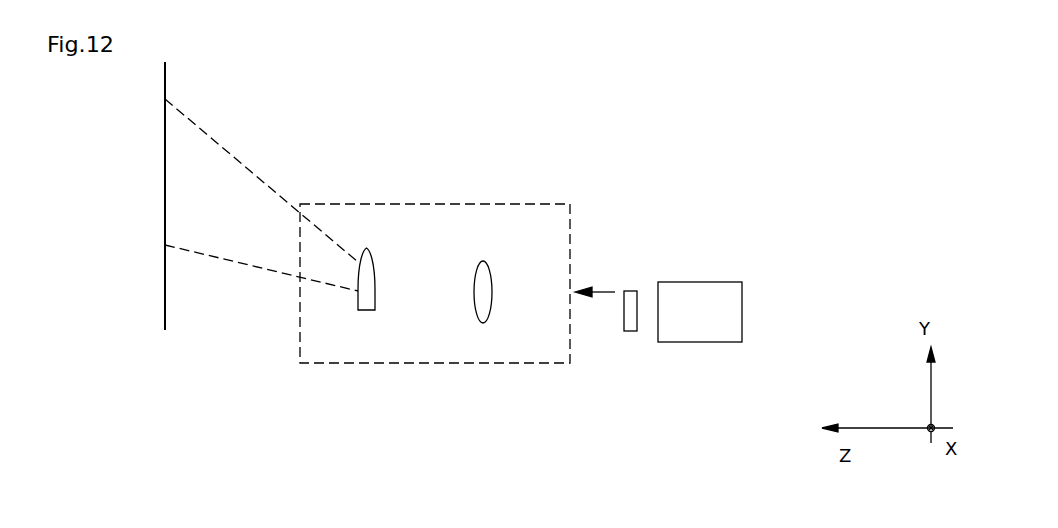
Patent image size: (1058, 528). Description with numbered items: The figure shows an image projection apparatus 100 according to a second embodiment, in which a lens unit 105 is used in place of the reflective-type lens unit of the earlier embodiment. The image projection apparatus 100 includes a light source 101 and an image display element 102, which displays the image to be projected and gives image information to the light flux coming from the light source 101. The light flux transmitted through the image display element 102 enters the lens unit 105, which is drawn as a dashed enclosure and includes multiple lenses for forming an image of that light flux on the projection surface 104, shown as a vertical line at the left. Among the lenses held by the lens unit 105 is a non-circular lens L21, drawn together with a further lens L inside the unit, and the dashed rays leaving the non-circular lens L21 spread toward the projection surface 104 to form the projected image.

The image projection apparatus 100 is at (373, 418).
The light source 101 is at (712, 342).
The image display element 102 is at (630, 331).
The projection surface 104 is at (165, 272).
The lens unit 105 is at (388, 204).
The non-circular lens L21 is at (366, 287).
The lens L is at (483, 300).